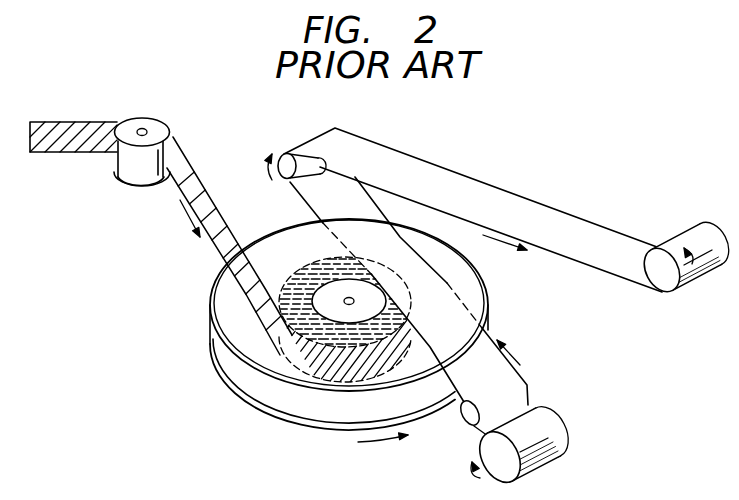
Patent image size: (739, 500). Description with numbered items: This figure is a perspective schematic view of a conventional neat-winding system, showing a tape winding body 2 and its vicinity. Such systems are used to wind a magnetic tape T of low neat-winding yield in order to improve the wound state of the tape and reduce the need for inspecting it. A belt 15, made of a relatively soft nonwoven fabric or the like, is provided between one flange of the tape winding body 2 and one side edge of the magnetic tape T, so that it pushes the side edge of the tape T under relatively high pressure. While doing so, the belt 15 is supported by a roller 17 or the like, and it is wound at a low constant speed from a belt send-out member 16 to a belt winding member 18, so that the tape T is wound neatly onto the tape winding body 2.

The tape winding body 2 is at (250, 369).
The magnetic tape T is at (191, 168).
The belt 15 is at (550, 214).
The belt send-out member 16 is at (565, 438).
The roller 17 is at (281, 161).
The belt winding member 18 is at (660, 297).